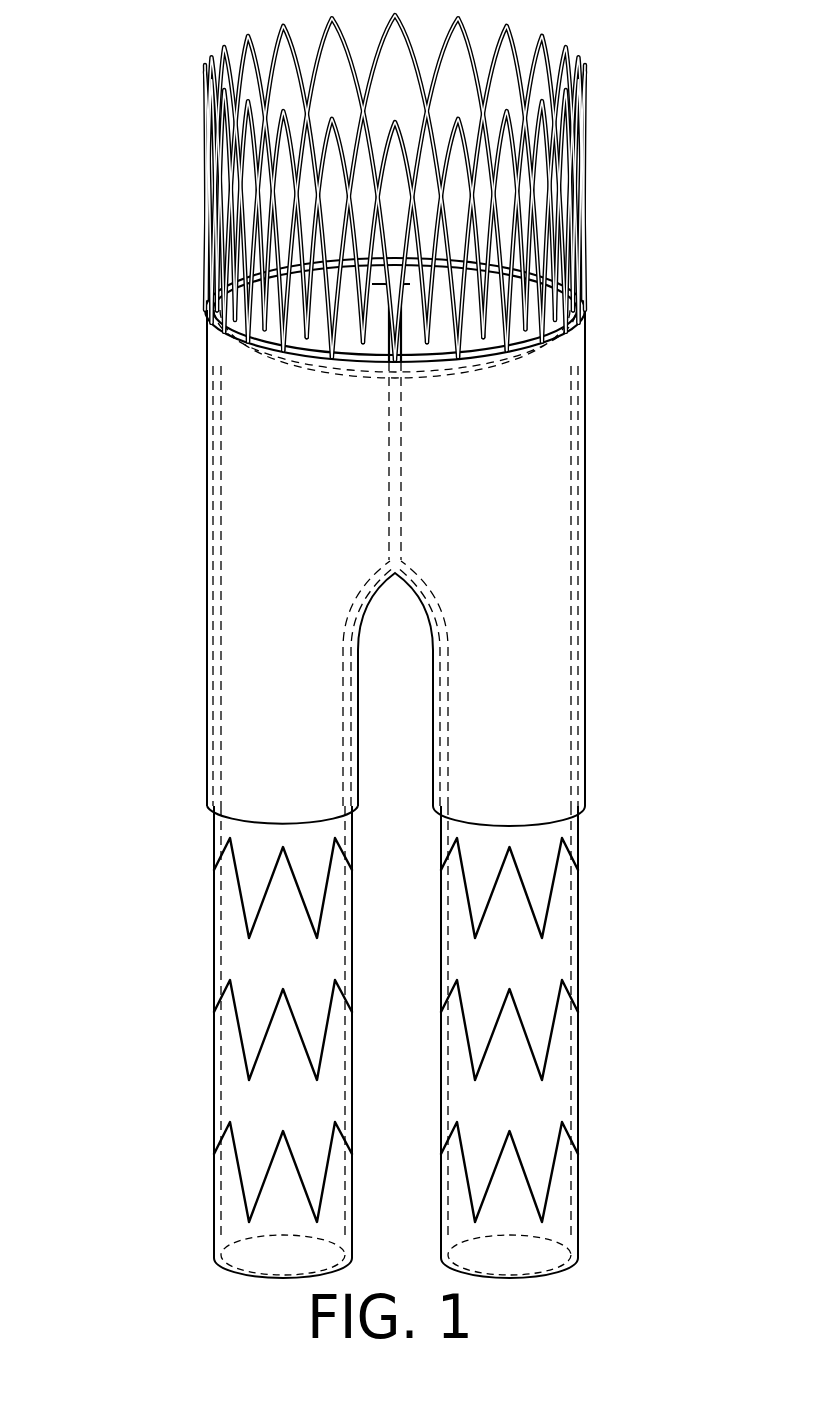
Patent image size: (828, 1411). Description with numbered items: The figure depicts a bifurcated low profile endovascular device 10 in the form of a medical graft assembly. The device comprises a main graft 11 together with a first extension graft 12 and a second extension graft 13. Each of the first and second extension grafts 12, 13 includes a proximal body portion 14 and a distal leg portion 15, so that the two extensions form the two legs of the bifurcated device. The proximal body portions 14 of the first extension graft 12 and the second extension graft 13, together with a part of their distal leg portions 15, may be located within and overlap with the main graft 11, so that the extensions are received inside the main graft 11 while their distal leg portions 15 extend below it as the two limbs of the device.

The bifurcated stent graft 10 is at (612, 457).
The main graft 11 is at (583, 322).
The first extension graft 12 is at (214, 870).
The second extension graft 13 is at (577, 867).
The proximal body portion 14 is at (223, 362).
The distal leg portion 15 is at (198, 1038).